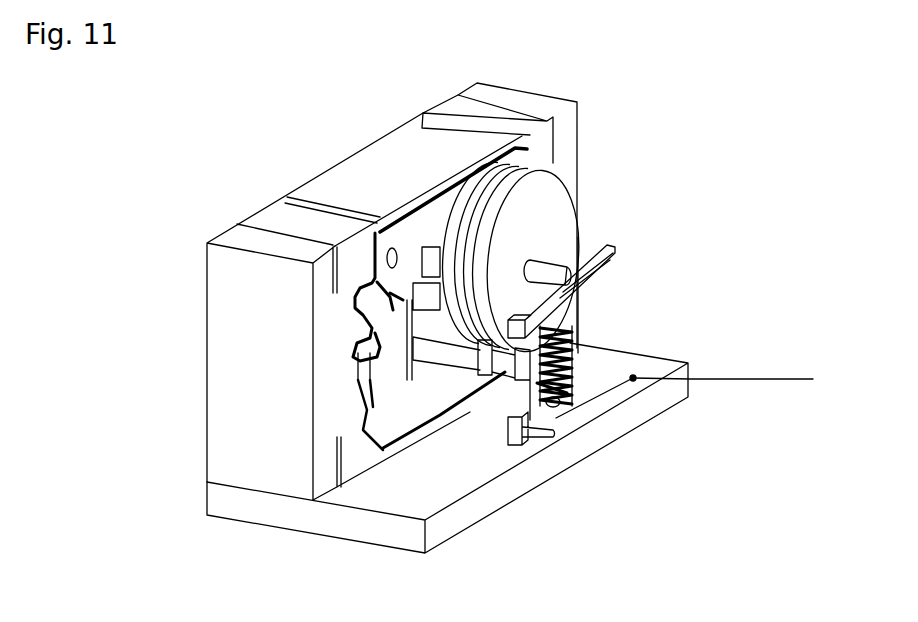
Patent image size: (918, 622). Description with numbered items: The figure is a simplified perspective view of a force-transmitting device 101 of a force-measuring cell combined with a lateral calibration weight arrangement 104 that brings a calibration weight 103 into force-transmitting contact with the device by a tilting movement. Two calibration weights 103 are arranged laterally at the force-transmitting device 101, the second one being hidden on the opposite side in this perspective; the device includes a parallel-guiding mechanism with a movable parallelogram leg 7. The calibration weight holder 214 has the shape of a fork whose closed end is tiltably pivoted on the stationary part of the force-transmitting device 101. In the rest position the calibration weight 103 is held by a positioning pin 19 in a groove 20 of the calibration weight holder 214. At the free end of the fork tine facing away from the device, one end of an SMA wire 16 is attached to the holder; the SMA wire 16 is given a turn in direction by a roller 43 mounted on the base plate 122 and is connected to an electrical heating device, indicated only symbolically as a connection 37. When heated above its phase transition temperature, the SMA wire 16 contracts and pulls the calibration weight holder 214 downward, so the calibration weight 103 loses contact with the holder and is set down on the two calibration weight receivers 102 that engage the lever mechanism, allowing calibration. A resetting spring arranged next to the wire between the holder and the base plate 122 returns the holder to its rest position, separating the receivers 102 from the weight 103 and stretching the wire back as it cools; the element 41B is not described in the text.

The force-transmitting device 101 is at (323, 131).
The calibration weight 103 is at (545, 192).
The calibration weight arrangement 104 is at (658, 200).
The positioning pin 19 is at (578, 236).
The calibration weight holder 214 is at (563, 272).
The groove 20 is at (565, 292).
The calibration weight receiver 102 is at (572, 334).
The SMA wire 16 is at (570, 395).
The bulb / stud 41B is at (556, 393).
The roller 43 is at (553, 440).
The connection 37 is at (767, 380).
The base plate 122 is at (268, 510).
The movable parallelogram leg 7 is at (340, 381).